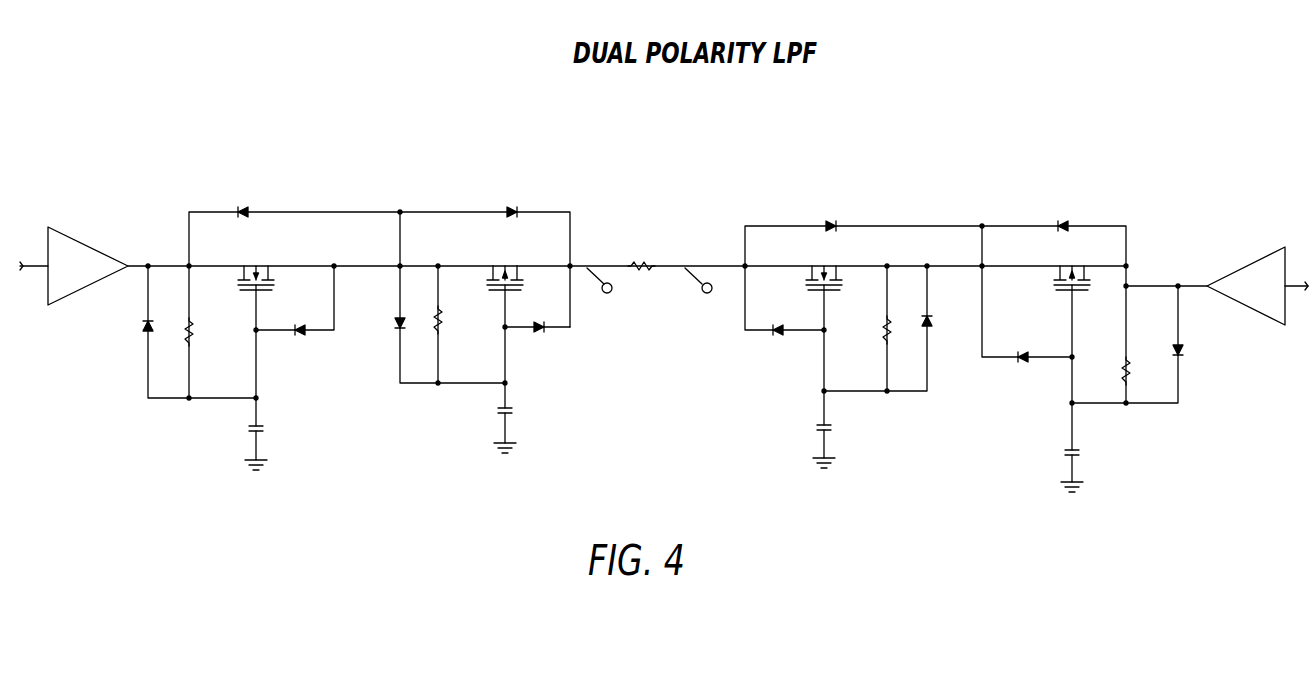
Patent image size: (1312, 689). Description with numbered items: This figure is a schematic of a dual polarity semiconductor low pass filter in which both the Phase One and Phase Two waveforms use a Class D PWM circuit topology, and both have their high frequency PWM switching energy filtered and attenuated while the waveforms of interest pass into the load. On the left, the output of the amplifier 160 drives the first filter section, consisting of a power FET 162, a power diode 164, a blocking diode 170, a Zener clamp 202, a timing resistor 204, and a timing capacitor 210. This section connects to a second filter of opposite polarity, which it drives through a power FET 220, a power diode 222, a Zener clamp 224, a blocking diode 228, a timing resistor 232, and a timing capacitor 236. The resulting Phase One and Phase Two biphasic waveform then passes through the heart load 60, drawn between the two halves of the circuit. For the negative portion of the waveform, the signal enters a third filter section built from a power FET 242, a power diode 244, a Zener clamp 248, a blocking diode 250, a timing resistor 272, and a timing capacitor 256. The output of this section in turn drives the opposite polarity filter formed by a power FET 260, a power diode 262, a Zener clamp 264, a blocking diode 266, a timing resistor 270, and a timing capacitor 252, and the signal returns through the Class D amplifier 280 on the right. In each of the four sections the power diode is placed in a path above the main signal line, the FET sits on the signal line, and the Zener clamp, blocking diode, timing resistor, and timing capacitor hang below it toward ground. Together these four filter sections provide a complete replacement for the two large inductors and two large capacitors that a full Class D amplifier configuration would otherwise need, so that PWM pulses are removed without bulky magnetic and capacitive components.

The heart load 60 is at (640, 262).
The amplifier 160 is at (72, 240).
The power FET 162 is at (263, 262).
The power diode 164 is at (220, 210).
The blocking diode 170 is at (142, 321).
The Zener clamp 202 is at (302, 320).
The timing resistor 204 is at (197, 320).
The timing capacitor 210 is at (253, 428).
The power FET 220 is at (495, 258).
The power diode 222 is at (512, 206).
The Zener clamp 224 is at (538, 333).
The blocking diode 228 is at (392, 317).
The timing resistor 232 is at (445, 312).
The timing capacitor 236 is at (513, 408).
The power FET 242 is at (802, 278).
The power diode 244 is at (846, 222).
The Zener clamp 248 is at (780, 333).
The blocking diode 250 is at (934, 335).
The timing capacitor 252 is at (1068, 452).
The timing capacitor 256 is at (815, 427).
The power FET 260 is at (1077, 258).
The power diode 262 is at (1066, 212).
The Zener clamp 264 is at (1020, 353).
The blocking diode 266 is at (1185, 345).
The timing resistor 270 is at (1133, 367).
The timing resistor 272 is at (882, 328).
The Class D amplifier 280 is at (1245, 265).